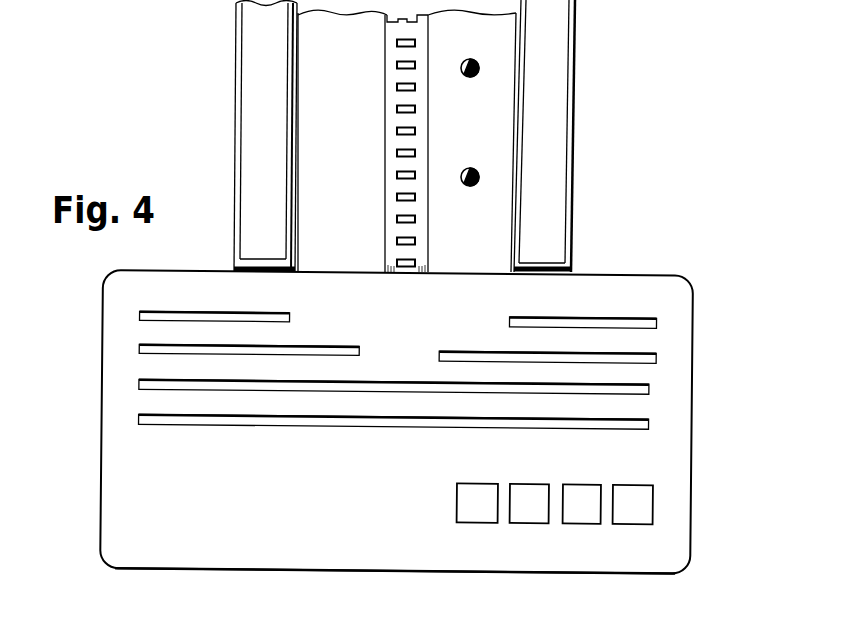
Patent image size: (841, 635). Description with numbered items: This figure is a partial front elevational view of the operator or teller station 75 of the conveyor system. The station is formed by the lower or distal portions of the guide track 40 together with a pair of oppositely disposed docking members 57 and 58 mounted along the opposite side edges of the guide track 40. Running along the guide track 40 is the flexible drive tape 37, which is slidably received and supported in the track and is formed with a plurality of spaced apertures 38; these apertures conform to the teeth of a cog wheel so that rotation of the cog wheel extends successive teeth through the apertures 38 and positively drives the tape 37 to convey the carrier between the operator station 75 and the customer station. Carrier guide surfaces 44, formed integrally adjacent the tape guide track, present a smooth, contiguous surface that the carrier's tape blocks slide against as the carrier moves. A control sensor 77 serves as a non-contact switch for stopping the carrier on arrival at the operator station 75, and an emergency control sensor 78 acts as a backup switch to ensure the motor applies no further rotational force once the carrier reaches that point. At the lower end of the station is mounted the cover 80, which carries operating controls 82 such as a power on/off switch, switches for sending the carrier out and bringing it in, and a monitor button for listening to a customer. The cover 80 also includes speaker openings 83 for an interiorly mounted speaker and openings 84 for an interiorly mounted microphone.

The flexible drive tape 37 is at (407, 169).
The spaced apertures 38 is at (397, 109).
The guide track 40 is at (317, 65).
The carrier guide surfaces 44 is at (458, 262).
The docking member 57 is at (257, 144).
The docking member 58 is at (553, 120).
The operator station 75 is at (597, 162).
The control sensor 77 is at (468, 58).
The emergency control sensor 78 is at (466, 187).
The cover 80 is at (404, 444).
The operating controls 82 is at (657, 532).
The speaker openings 83 is at (645, 357).
The microphone openings 84 is at (140, 386).